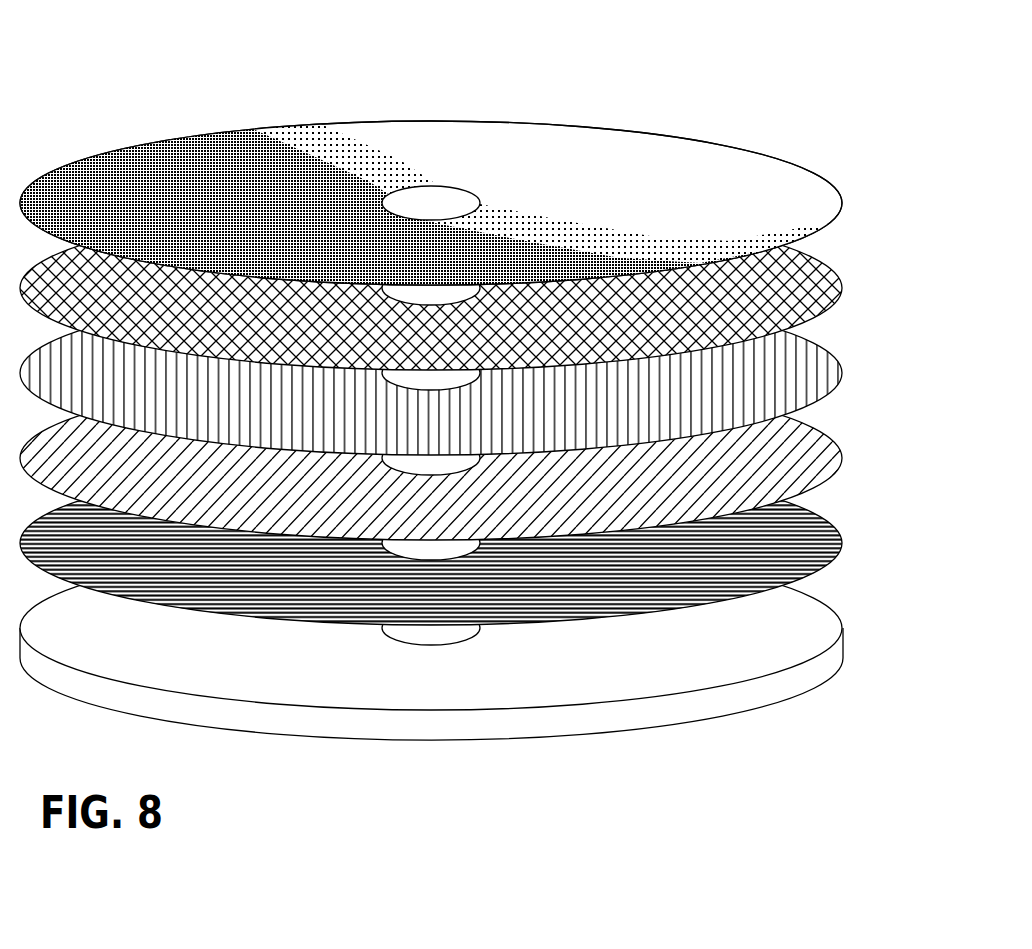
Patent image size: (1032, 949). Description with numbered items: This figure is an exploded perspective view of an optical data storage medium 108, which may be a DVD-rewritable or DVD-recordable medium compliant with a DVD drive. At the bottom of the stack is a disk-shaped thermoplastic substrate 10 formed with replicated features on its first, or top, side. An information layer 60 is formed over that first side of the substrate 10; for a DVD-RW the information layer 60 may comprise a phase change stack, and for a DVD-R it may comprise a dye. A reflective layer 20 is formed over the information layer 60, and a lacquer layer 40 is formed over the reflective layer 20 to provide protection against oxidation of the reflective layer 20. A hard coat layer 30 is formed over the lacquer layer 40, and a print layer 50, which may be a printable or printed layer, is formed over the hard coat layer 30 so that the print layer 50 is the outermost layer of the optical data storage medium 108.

The optical data storage medium 108 is at (454, 407).
The substrate 10 is at (783, 680).
The information layer 60 is at (828, 518).
The reflective layer 20 is at (825, 442).
The lacquer layer 40 is at (830, 347).
The hard coat layer 30 is at (827, 263).
The print layer 50 is at (823, 183).